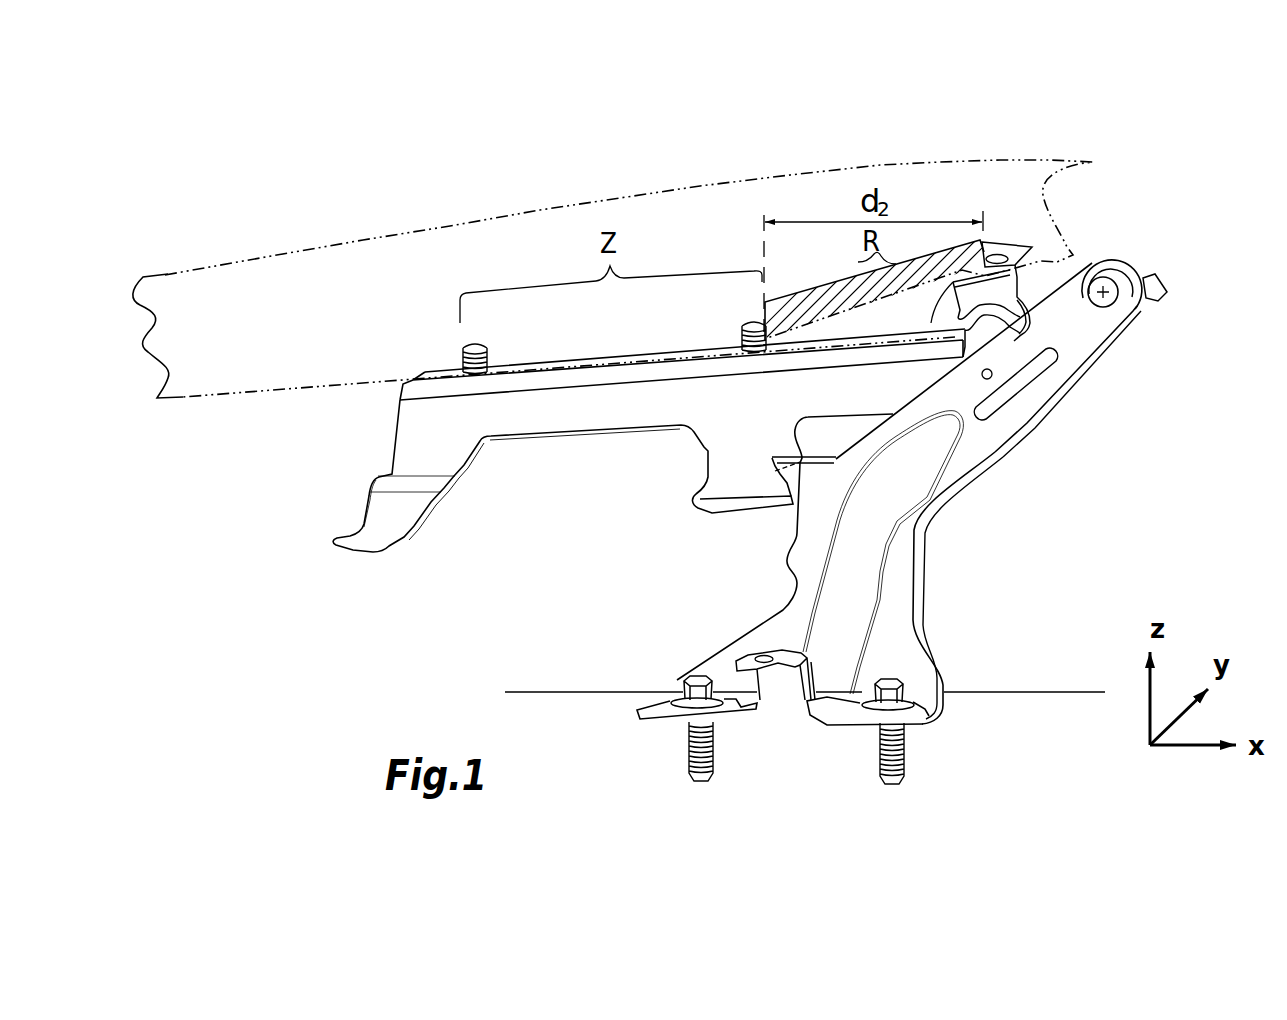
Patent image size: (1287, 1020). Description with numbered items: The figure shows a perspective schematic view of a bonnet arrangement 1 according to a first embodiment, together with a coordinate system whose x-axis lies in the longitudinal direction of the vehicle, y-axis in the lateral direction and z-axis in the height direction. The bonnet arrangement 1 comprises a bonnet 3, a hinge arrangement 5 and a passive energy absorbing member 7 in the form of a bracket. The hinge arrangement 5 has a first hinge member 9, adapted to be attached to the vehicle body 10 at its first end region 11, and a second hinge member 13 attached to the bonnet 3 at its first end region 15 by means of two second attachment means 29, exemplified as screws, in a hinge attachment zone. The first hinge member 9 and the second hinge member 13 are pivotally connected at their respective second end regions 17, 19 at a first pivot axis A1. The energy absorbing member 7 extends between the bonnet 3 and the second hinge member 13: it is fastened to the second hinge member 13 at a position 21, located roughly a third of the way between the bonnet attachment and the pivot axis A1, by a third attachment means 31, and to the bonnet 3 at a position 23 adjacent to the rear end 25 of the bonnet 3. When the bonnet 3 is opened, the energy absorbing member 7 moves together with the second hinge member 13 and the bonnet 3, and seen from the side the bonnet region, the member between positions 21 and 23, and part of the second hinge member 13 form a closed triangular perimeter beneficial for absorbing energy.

The bonnet arrangement 1 is at (208, 142).
The bonnet 3 is at (353, 264).
The hinge arrangement 5 is at (1040, 483).
The passive energy absorbing member 7 is at (1025, 290).
The first hinge member 9 is at (900, 575).
The vehicle body 10 is at (1038, 738).
The first end region of the first hinge member 11 is at (869, 621).
The second hinge member 13 is at (873, 399).
The first end region of the second hinge member 15 is at (552, 407).
The second end region of the first hinge member 17 is at (1097, 318).
The second end region of the second hinge member 19 is at (1043, 320).
The attachment position on the second hinge member 21 is at (988, 403).
The third attachment means 31 is at (985, 384).
The attachment position on the bonnet 23 is at (992, 256).
The rear end of the bonnet 25 is at (1067, 247).
The second attachment means 29 is at (740, 337).
The first pivot axis A1 is at (1100, 271).